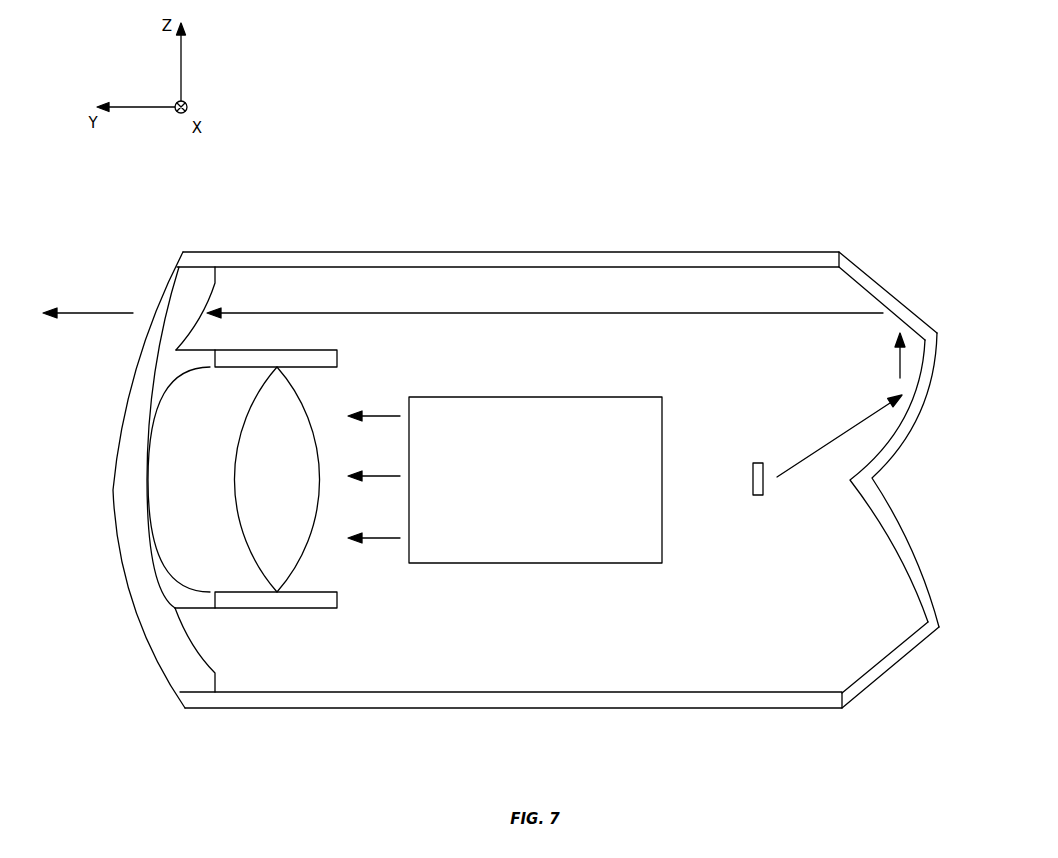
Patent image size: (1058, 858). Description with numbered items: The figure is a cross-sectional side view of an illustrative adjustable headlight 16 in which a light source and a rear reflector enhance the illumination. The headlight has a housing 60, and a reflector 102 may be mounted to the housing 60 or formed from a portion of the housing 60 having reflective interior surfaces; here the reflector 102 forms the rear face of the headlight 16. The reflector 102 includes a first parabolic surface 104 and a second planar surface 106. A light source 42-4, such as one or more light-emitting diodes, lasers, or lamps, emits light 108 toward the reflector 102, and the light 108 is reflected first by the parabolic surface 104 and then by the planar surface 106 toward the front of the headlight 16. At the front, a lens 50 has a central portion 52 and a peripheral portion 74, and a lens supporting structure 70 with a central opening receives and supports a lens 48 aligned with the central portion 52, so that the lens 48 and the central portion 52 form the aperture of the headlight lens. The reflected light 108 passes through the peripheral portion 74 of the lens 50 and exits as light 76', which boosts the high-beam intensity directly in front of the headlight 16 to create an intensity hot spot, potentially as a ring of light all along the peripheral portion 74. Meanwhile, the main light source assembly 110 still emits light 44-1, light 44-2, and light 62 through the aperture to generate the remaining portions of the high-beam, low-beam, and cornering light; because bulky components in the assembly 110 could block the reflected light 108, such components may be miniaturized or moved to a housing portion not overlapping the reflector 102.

The headlight 16 is at (717, 75).
The housing 60 is at (660, 258).
The lens 50 is at (131, 593).
The peripheral portion 74 is at (215, 297).
The lens supporting structure 70 is at (338, 360).
The central portion 52 is at (167, 470).
The lens 48 is at (276, 479).
The light 76' is at (88, 286).
The main light source assembly 110 is at (535, 480).
The light 44-1 is at (381, 414).
The light 44-2 is at (381, 474).
The light 62 is at (381, 536).
The light 108 is at (742, 315).
The light source 42-4 is at (758, 463).
The reflector 102 is at (842, 238).
The second planar surface 106 is at (853, 292).
The first parabolic surface 104 is at (887, 428).